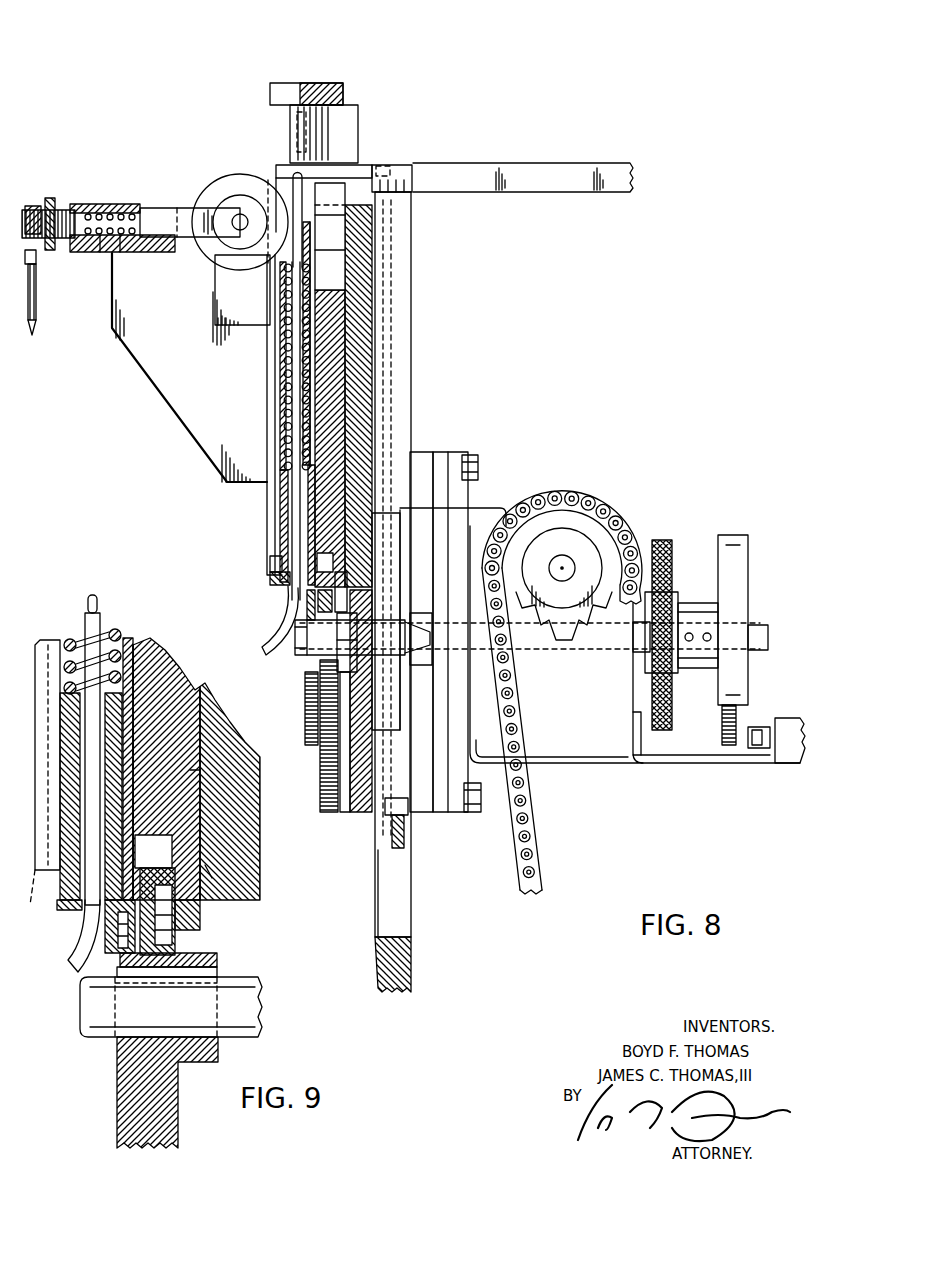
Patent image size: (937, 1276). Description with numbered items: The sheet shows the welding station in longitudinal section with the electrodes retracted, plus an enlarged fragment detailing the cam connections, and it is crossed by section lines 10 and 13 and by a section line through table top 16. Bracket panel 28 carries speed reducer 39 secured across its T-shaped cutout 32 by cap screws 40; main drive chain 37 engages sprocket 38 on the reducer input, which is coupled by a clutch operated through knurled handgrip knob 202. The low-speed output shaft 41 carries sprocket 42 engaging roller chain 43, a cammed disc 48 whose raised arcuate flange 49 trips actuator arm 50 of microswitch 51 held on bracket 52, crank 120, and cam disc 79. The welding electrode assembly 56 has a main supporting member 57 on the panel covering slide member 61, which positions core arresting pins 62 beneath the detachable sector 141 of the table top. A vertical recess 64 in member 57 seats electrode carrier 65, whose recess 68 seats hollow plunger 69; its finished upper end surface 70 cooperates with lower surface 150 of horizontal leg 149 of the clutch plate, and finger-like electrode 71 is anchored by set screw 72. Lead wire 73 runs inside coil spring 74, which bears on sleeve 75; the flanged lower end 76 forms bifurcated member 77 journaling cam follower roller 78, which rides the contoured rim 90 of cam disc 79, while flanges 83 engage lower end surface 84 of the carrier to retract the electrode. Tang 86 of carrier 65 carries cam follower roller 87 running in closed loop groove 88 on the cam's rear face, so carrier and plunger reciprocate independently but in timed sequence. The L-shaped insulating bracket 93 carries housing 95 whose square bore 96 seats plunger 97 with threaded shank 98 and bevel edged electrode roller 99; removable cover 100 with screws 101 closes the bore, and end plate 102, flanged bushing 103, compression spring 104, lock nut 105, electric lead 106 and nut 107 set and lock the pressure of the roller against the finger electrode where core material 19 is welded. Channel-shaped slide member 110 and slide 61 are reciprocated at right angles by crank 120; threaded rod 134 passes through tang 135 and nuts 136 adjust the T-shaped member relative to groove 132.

In FIG. 8, the section line 10 is at (425, 32).
In FIG. 8, the section line 13 is at (27, 70).
In FIG. 8, the table top 16 is at (437, 165).
In FIG. 8, the core material 19 is at (360, 112).
In FIG. 8, the bracket panel 28 is at (412, 322).
In FIG. 8, the T-shaped cutout 32 is at (378, 937).
In FIG. 8, the chain belt 37 is at (535, 833).
In FIG. 8, the sprocket 38 is at (558, 652).
In FIG. 8, the speed reduction unit 39 is at (566, 762).
In FIG. 8, the cap screws 40 is at (478, 463).
In FIG. 8, the low-speed output shaft 41 is at (294, 661).
In FIG. 9, the low-speed output shaft 41 is at (250, 1042).
In FIG. 8, the sprocket 42 is at (662, 541).
In FIG. 8, the roller chain 43 is at (676, 562).
In FIG. 8, the cammed disc 48 is at (717, 537).
In FIG. 8, the raised arcuate flange 49 is at (748, 570).
In FIG. 8, the actuator arm 50 is at (754, 727).
In FIG. 8, the microswitch 51 is at (792, 764).
In FIG. 8, the bracket 52 is at (662, 766).
In FIG. 8, the welding electrode assembly 56 is at (466, 332).
In FIG. 8, the main supporting member 57 is at (377, 246).
In FIG. 9, the main supporting member 57 is at (260, 888).
In FIG. 8, the slide member 61 is at (393, 293).
In FIG. 8, the core arresting pins 62 is at (296, 135).
In FIG. 8, the vertical recess 64 is at (346, 357).
In FIG. 9, the vertical recess 64 is at (192, 771).
In FIG. 8, the electrode carrier 65 is at (336, 387).
In FIG. 9, the electrode carrier 65 is at (196, 714).
In FIG. 8, the vertical recess 68 is at (318, 410).
In FIG. 9, the vertical recess 68 is at (131, 650).
In FIG. 8, the electrode-carrying plunger 69 is at (304, 422).
In FIG. 9, the electrode-carrying plunger 69 is at (133, 672).
In FIG. 8, the upper end surface 70 is at (306, 228).
In FIG. 8, the finger-like electrode 71 is at (300, 201).
In FIG. 8, the set screw 72 is at (306, 250).
In FIG. 8, the insulated lead wire 73 is at (285, 369).
In FIG. 9, the insulated lead wire 73 is at (85, 614).
In FIG. 8, the coil spring 74 is at (282, 393).
In FIG. 9, the coil spring 74 is at (70, 645).
In FIG. 8, the sleeve 75 is at (280, 525).
In FIG. 9, the sleeve 75 is at (117, 736).
In FIG. 8, the outwardly flanged lower end 76 is at (271, 581).
In FIG. 9, the outwardly flanged lower end 76 is at (92, 912).
In FIG. 9, the bifurcated member 77 is at (108, 970).
In FIG. 8, the cam follower roller 78 is at (318, 609).
In FIG. 9, the cam follower roller 78 is at (141, 966).
In FIG. 8, the cam disc 79 is at (330, 690).
In FIG. 9, the cam disc 79 is at (117, 1092).
In FIG. 9, the flanges 83 is at (57, 900).
In FIG. 8, the lower end surface 84 is at (270, 561).
In FIG. 9, the lower end surface 84 is at (152, 838).
In FIG. 9, the tang 86 is at (212, 868).
In FIG. 9, the cam follower roller 87 is at (176, 946).
In FIG. 9, the closed loop groove 88 is at (182, 963).
In FIG. 8, the contoured rim 90 is at (320, 762).
In FIG. 8, the L-shaped bracket 93 is at (176, 402).
In FIG. 8, the housing 95 is at (100, 252).
In FIG. 8, the square bore 96 is at (118, 252).
In FIG. 8, the plunger 97 is at (162, 238).
In FIG. 8, the threaded shank 98 is at (50, 250).
In FIG. 8, the welding electrode roller 99 is at (233, 262).
In FIG. 8, the removable cover 100 is at (160, 207).
In FIG. 8, the screws 101 is at (138, 206).
In FIG. 8, the end plate 102 is at (98, 206).
In FIG. 8, the flanged bushing 103 is at (45, 208).
In FIG. 8, the compression spring 104 is at (140, 213).
In FIG. 8, the lock nut 105 is at (38, 280).
In FIG. 8, the insulated electric lead 106 is at (36, 318).
In FIG. 8, the nut 107 is at (35, 198).
In FIG. 8, the channel-shaped slide member 110 is at (470, 520).
In FIG. 8, the crank 120 is at (447, 690).
In FIG. 8, the groove 132 is at (452, 716).
In FIG. 8, the threaded rod 134 is at (392, 850).
In FIG. 8, the tang 135 is at (413, 192).
In FIG. 8, the pin-supporting fingers 136 is at (372, 167).
In FIG. 8, the detachable sector 141 is at (276, 175).
In FIG. 8, the horizontal leg 149 is at (322, 83).
In FIG. 8, the lower surface 150 is at (343, 95).
In FIG. 8, the knurled handgrip knob 202 is at (561, 526).